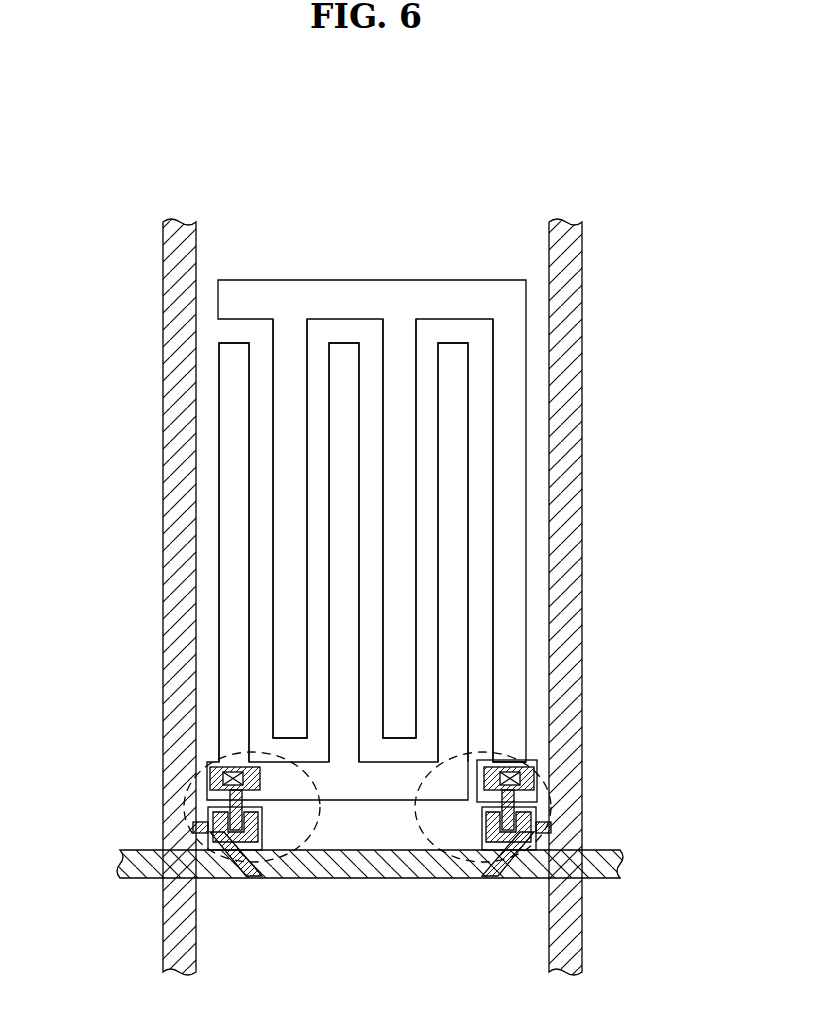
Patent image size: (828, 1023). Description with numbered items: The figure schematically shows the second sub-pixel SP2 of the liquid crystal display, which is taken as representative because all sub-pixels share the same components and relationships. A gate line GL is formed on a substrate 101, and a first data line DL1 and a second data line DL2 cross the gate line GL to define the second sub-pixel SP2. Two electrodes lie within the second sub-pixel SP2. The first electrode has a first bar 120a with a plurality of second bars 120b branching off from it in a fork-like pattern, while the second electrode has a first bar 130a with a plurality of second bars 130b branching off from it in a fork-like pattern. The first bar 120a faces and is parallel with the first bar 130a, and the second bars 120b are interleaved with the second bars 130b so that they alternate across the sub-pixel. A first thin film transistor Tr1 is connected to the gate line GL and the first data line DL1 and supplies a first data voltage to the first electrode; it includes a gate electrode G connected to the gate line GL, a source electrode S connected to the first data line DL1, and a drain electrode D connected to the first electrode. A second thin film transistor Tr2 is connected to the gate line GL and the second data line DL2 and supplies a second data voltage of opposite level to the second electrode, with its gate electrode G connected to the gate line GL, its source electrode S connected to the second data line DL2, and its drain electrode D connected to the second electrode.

The substrate 101 is at (388, 1016).
The second sub-pixel SP2 is at (549, 222).
The first data line DL1 is at (173, 263).
The second data line DL2 is at (566, 246).
The gate line GL is at (137, 866).
The first bar of the second electrode 130a is at (348, 296).
The second bars of the second electrode 130b is at (502, 497).
The first bar of the first electrode 120a is at (371, 788).
The second bars of the first electrode 120b is at (233, 518).
The first thin film transistor Tr1 is at (250, 860).
The second thin film transistor Tr2 is at (483, 860).
The drain electrode D is at (262, 777).
The gate electrode G is at (265, 813).
The source electrode S is at (258, 835).